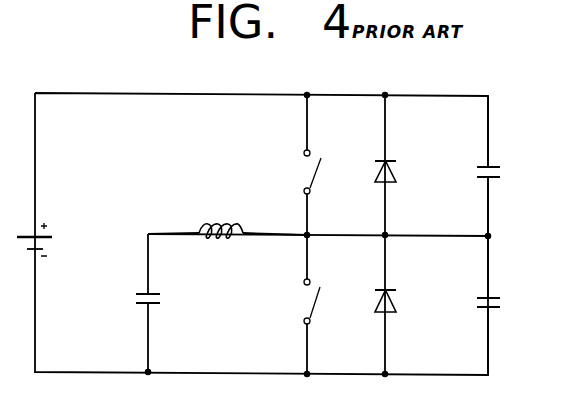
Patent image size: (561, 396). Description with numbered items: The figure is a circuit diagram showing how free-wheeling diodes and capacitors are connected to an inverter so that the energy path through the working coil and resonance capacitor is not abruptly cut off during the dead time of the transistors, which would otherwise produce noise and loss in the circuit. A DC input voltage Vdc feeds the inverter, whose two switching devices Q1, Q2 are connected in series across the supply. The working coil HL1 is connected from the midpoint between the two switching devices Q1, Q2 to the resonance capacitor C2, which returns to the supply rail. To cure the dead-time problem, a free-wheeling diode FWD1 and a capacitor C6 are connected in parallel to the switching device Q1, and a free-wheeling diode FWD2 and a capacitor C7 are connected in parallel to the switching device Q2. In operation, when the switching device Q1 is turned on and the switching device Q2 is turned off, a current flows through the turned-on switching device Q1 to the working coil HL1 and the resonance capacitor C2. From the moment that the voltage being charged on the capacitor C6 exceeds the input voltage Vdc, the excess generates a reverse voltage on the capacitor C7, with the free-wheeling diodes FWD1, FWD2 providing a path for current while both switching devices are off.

The input voltage Vdc is at (54, 239).
The resonance capacitor C2 is at (164, 304).
The working coil HL1 is at (227, 244).
The switching device Q1 is at (295, 164).
The switching device Q2 is at (295, 306).
The free-wheeling diode FWD1 is at (412, 164).
The free-wheeling diode FWD2 is at (413, 306).
The capacitor C6 is at (506, 167).
The capacitor C7 is at (505, 305).